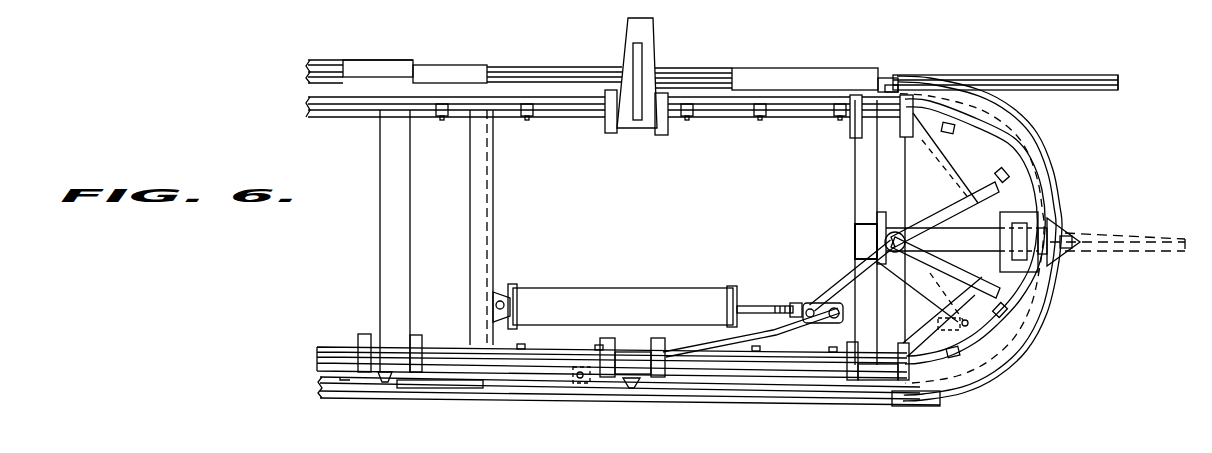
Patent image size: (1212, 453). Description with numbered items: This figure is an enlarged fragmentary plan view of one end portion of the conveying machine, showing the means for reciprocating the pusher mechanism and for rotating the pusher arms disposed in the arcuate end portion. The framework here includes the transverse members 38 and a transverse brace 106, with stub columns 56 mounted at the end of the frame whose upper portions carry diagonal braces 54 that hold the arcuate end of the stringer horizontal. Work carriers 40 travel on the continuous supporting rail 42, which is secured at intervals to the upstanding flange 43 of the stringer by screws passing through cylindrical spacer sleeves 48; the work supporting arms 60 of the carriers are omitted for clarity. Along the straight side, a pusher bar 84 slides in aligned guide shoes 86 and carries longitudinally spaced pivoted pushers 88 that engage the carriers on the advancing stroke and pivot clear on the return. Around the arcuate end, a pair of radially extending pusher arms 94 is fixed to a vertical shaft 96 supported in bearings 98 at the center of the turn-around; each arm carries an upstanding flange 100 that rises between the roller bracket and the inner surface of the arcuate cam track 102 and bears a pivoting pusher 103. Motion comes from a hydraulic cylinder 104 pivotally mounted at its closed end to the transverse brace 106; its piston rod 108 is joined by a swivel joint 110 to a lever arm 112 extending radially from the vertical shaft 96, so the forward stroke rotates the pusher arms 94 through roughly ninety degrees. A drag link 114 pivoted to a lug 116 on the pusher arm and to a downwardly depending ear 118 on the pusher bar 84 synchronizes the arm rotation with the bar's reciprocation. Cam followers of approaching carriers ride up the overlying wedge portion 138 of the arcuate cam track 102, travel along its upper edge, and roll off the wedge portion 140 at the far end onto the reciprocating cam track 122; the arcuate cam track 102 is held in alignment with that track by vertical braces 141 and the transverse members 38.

The transverse member 38 is at (385, 249).
The work carrier 40 is at (630, 138).
The supporting rail 42 is at (345, 99).
The upstanding flange 43 is at (561, 110).
The cylindrical spacer sleeve 48 is at (449, 110).
The diagonal brace 54 is at (932, 214).
The stub column 56 is at (857, 232).
The work supporting arm 60 is at (640, 37).
The pusher bar 84 is at (1097, 92).
The guide shoe 86 is at (318, 377).
The pusher 88 is at (384, 382).
The pusher arm 94 is at (980, 232).
The vertical shaft 96 is at (896, 231).
The bearing 98 is at (885, 242).
The upstanding flange 100 is at (1057, 221).
The arcuate cam track 102 is at (1050, 296).
The pivoting pusher 103 is at (1053, 262).
The hydraulic cylinder 104 is at (551, 292).
The transverse brace 106 is at (481, 220).
The piston rod 108 is at (756, 305).
The swivel joint 110 is at (792, 316).
The lever arm 112 is at (840, 278).
The drag link 114 is at (738, 346).
The lug 116 is at (810, 303).
The depending ear 118 is at (577, 326).
The reciprocating cam track 122 is at (1068, 74).
The wedge portion 138 is at (910, 405).
The wedge portion 140 is at (893, 79).
The vertical brace 141 is at (1080, 240).